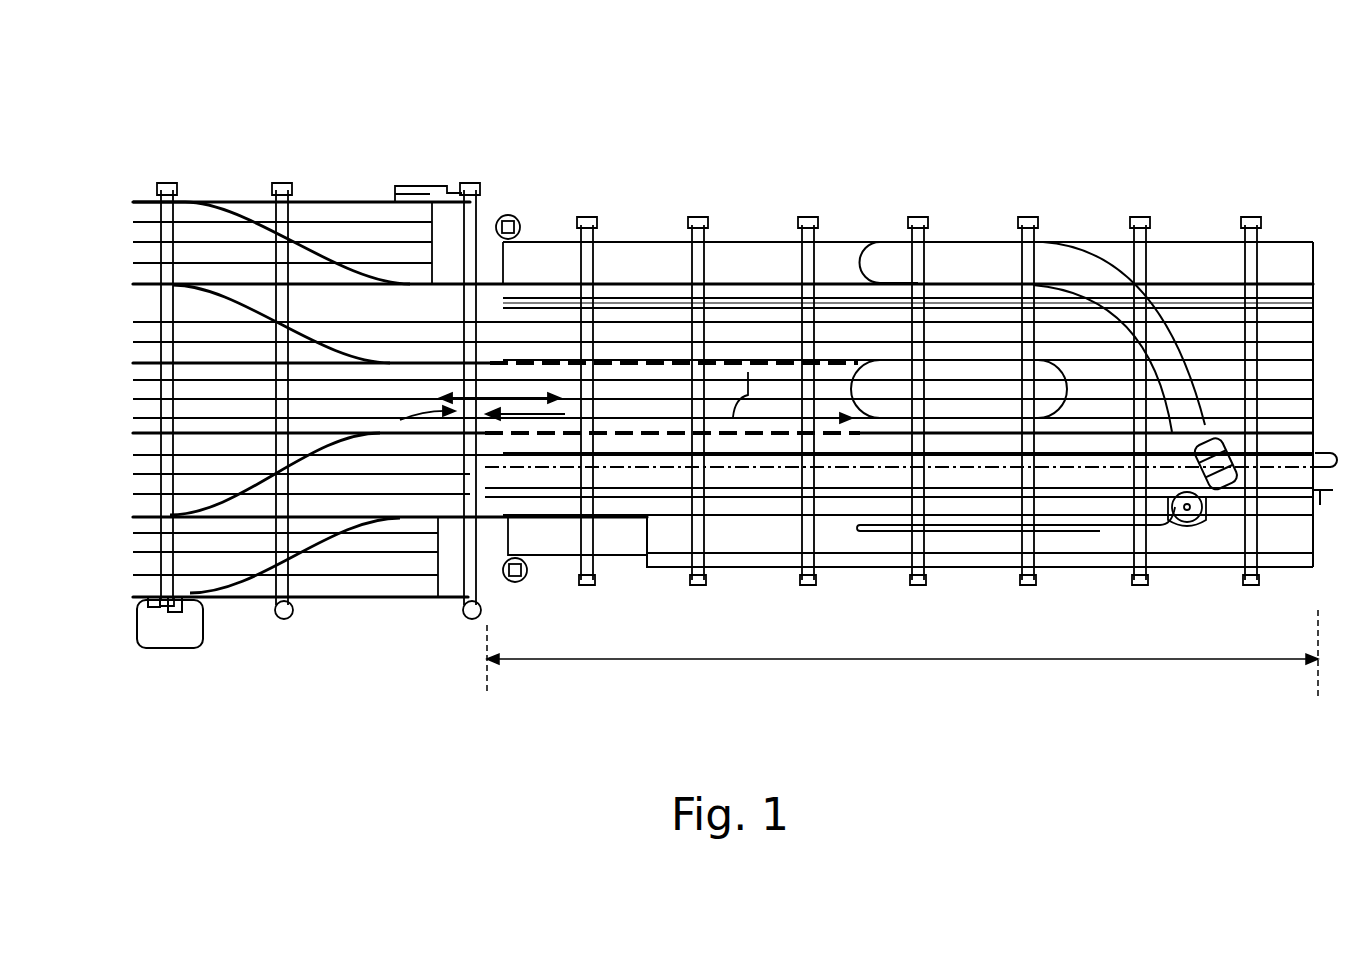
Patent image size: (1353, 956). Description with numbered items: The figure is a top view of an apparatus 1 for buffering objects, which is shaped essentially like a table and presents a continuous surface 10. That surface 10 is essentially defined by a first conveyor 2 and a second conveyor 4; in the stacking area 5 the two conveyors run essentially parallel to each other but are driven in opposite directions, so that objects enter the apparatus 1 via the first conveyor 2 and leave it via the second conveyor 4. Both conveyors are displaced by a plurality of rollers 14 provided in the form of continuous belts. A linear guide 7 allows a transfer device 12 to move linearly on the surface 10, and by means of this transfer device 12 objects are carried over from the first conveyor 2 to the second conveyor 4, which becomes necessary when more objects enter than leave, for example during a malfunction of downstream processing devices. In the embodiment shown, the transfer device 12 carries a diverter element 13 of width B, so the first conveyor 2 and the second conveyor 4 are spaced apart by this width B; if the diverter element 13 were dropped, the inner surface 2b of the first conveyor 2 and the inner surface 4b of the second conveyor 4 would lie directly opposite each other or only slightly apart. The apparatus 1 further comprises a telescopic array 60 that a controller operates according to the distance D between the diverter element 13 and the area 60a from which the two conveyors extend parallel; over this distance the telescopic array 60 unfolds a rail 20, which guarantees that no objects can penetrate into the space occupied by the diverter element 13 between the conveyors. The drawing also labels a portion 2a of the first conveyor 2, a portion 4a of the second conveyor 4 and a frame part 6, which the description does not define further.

The apparatus for buffering objects 1 is at (870, 148).
The first conveyor 2 is at (132, 280).
The main frame left part 2a is at (535, 277).
The inner surface of first conveyor 2b is at (1213, 372).
The second conveyor 4 is at (128, 512).
The frame lower part 4a is at (627, 420).
The inner surface of second conveyor 4b is at (545, 520).
The stacking area 5 is at (690, 661).
The bottom frame 6 is at (875, 570).
The linear guide 7 is at (622, 297).
The surface 10 is at (562, 330).
The transfer device 12 is at (1078, 270).
The diverter element 13 is at (985, 385).
The rollers 14 is at (703, 258).
The rail 20 is at (783, 355).
The telescopic array 60 is at (490, 395).
The area 60a is at (365, 440).
The distance D is at (534, 440).
The width B is at (747, 363).